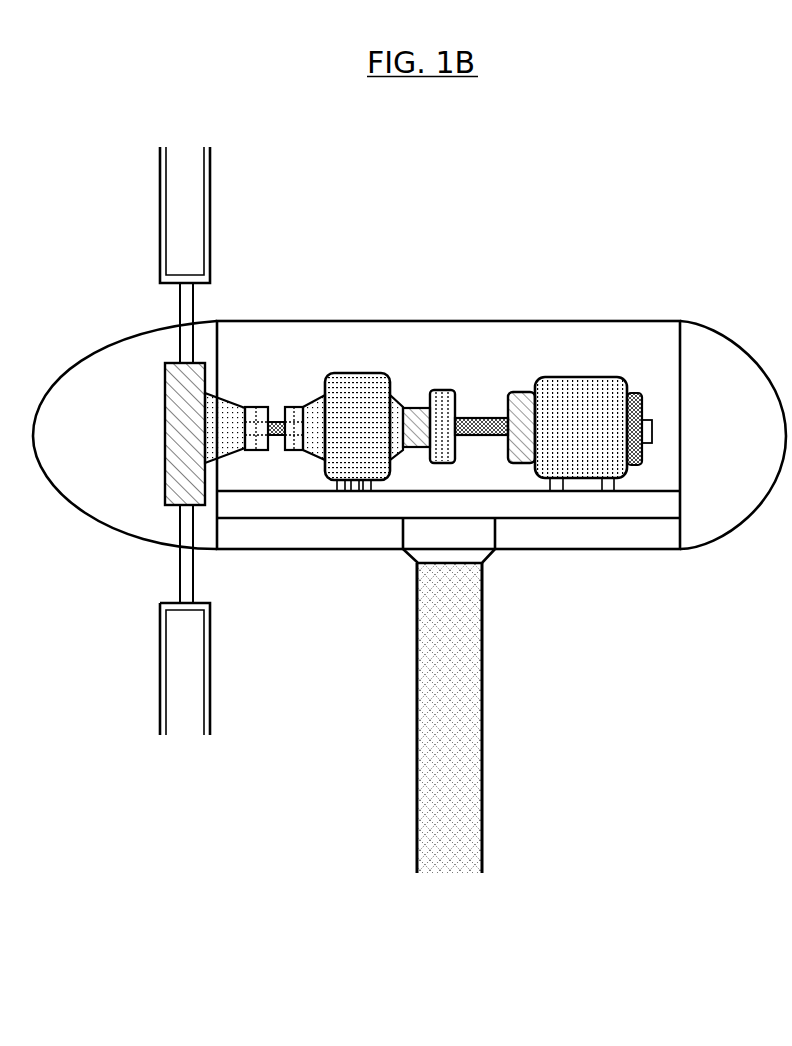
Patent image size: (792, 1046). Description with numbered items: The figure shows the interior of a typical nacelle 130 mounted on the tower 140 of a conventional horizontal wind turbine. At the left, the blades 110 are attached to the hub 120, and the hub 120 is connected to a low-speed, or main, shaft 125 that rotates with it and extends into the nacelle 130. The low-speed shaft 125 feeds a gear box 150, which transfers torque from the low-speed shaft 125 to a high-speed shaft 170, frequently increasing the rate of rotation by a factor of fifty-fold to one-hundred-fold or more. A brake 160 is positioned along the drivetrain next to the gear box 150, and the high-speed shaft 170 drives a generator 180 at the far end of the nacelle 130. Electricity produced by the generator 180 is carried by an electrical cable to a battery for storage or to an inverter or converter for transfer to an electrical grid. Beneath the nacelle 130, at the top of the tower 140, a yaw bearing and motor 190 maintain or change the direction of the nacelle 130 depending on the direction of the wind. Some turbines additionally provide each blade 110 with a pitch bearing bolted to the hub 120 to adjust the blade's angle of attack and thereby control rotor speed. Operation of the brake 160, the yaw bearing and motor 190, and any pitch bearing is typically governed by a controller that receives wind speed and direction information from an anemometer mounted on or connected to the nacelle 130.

The blade 110 is at (210, 720).
The hub 120 is at (163, 380).
The low-speed shaft 125 is at (277, 415).
The nacelle 130 is at (267, 550).
The tower 140 is at (468, 734).
The gear box 150 is at (356, 373).
The brake 160 is at (445, 390).
The high-speed shaft 170 is at (485, 435).
The generator 180 is at (578, 377).
The yaw bearing and motor 190 is at (405, 568).